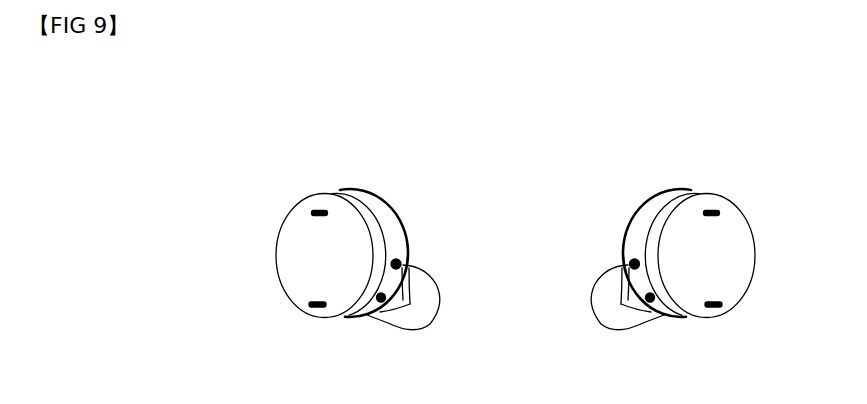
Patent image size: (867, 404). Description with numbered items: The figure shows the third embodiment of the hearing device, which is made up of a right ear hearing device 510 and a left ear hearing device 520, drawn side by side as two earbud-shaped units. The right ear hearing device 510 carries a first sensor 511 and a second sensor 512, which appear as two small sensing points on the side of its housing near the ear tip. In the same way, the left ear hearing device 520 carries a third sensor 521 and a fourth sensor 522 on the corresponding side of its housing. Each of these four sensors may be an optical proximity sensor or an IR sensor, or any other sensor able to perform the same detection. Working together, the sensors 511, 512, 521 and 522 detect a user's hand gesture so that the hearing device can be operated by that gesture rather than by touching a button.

The right ear hearing device 510 is at (668, 192).
The first sensor 511 is at (632, 262).
The second sensor 512 is at (654, 299).
The left ear hearing device 520 is at (375, 200).
The third sensor 521 is at (397, 262).
The fourth sensor 522 is at (379, 299).